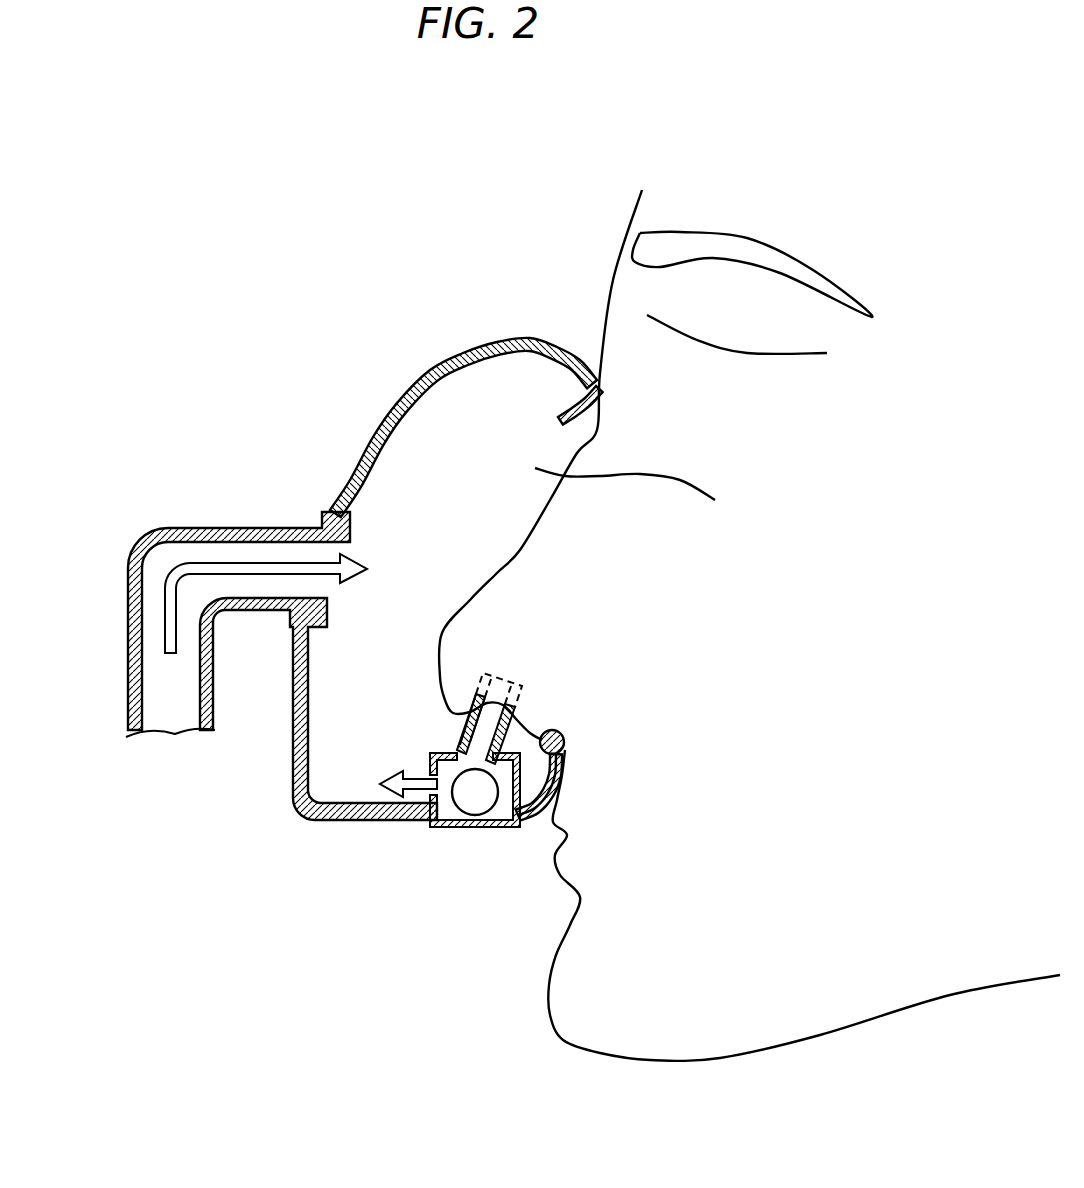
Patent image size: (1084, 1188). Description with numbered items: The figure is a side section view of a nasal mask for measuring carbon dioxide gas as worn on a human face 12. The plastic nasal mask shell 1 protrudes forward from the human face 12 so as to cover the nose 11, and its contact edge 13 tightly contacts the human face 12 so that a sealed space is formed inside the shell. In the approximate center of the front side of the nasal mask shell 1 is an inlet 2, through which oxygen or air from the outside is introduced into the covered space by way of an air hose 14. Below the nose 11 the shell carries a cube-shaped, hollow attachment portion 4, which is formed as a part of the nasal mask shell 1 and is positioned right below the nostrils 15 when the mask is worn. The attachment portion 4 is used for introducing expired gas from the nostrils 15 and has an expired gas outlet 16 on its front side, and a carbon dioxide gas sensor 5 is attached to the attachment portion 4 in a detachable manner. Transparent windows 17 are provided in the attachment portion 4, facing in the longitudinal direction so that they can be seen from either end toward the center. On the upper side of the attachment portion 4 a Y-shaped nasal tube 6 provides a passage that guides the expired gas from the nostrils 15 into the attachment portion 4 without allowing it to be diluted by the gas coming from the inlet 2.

The nasal mask shell 1 is at (420, 373).
The inlet 2 is at (303, 555).
The attachment portion 4 is at (430, 762).
The carbon dioxide gas sensor 5 is at (470, 822).
The Y-shaped nasal tube 6 is at (470, 712).
The nose 11 is at (535, 568).
The human face 12 is at (535, 468).
The contact edge 13 is at (598, 370).
The air hose 14 is at (127, 623).
The nostrils 15 is at (562, 745).
The expired gas outlet 16 is at (408, 812).
The transparent windows 17 is at (462, 798).